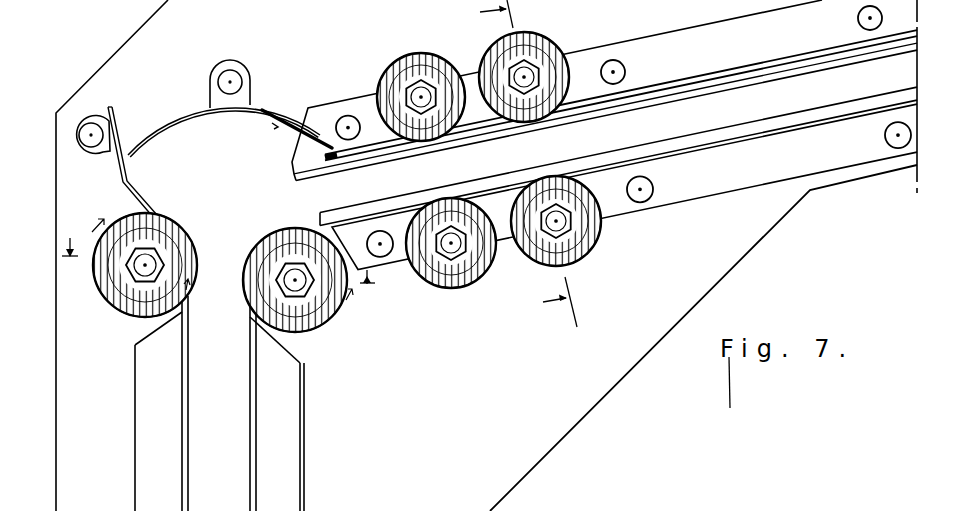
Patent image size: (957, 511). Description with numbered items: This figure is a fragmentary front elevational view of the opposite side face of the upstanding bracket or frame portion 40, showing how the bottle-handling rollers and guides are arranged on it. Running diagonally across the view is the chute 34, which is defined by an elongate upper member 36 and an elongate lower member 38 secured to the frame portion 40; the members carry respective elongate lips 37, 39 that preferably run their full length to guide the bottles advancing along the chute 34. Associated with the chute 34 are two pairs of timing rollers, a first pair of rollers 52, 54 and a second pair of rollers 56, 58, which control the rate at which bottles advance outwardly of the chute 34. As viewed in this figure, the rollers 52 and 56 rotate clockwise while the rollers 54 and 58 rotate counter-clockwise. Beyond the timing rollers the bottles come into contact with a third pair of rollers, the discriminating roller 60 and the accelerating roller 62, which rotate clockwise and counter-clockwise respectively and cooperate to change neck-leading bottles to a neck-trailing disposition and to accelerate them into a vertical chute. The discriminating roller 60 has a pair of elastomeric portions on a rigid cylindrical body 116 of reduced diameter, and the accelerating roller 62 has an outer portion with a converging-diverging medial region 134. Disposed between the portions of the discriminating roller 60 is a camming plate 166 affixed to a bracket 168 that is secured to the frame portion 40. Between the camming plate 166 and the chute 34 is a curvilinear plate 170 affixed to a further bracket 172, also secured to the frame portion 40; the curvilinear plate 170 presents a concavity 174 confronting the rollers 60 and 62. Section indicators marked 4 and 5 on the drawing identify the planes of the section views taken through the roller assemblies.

The bracket 168 is at (88, 93).
The bracket 172 is at (234, 62).
The curvilinear plate 170 is at (265, 110).
The concavity 174 is at (295, 115).
The camming plate 166 is at (149, 200).
The converging-diverging medial region 134 is at (264, 247).
The discriminating roller 60 is at (108, 293).
The cylindrical body 116 is at (125, 317).
The accelerating roller 62 is at (304, 331).
The timing roller 56 is at (432, 55).
The timing roller 52 is at (535, 48).
The timing roller 58 is at (462, 278).
The timing roller 54 is at (572, 260).
The elongate upper member 36 is at (703, 78).
The chute 34 is at (736, 79).
The elongate lip 37 is at (828, 68).
The elongate lip 39 is at (882, 92).
The elongate lower member 38 is at (737, 138).
The bracket 40 is at (512, 428).
The section line 4 is at (532, 163).
The section line 5 is at (218, 273).